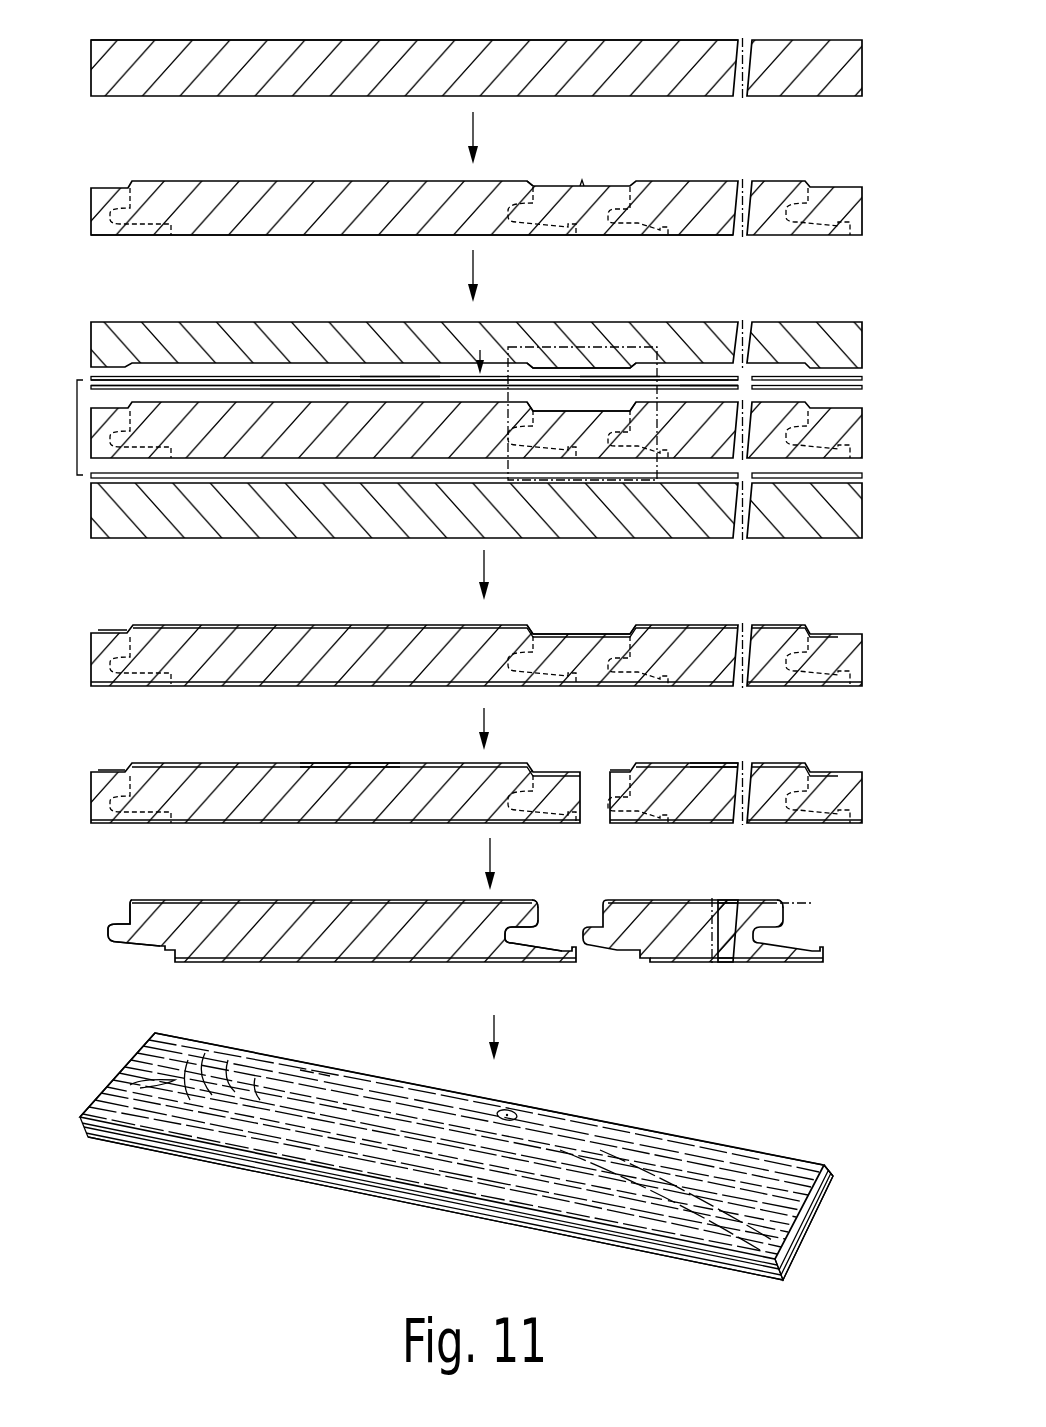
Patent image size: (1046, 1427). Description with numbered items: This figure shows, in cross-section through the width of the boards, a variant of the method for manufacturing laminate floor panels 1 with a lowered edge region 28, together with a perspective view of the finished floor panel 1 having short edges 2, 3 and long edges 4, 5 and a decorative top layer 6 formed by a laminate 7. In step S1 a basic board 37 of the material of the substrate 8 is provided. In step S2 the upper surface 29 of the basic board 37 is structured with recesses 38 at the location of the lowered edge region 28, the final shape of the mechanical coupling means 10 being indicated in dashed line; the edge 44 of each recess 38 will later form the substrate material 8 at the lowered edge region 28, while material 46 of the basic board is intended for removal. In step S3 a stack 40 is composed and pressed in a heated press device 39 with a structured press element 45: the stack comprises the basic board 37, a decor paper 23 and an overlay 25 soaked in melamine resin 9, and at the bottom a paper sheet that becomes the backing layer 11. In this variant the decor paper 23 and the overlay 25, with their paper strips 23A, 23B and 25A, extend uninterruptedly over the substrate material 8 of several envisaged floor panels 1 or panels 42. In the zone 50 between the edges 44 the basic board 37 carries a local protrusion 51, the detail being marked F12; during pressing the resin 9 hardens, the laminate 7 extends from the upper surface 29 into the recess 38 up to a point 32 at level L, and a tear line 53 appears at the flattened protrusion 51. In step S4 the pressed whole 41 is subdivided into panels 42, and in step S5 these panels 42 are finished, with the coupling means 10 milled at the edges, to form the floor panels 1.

The floor panel 1 is at (343, 928).
The short edge 2 is at (97, 1082).
The short edge 3 is at (828, 1154).
The long edge 4 is at (111, 918).
The long edge 5 is at (543, 922).
The decorative top layer 6 is at (310, 1094).
The laminate 7 is at (290, 765).
The substrate 8 is at (325, 222).
The melamine resin 9 is at (226, 386).
The mechanical coupling means 10 is at (124, 211).
The backing layer 11 is at (347, 478).
The decor paper 23 is at (187, 384).
The paper strip 23A is at (300, 387).
The paper strip 23B is at (706, 388).
The overlay 25 is at (142, 375).
The paper strip 25A is at (398, 380).
The lowered edge region 28 is at (133, 901).
The upper surface 29 is at (470, 40).
The point 32 is at (795, 903).
The basic board 37 is at (352, 76).
The recess 38 is at (128, 186).
The press device 39 is at (792, 312).
The stack 40 is at (77, 428).
The pressed whole 41 is at (105, 668).
The panel 42 is at (368, 806).
The edge 44 is at (532, 184).
The structured press element 45 is at (535, 347).
The material 46 is at (582, 201).
The zone 50 is at (545, 400).
The protrusion 51 is at (594, 404).
The tear line 53 is at (578, 630).
The detail region shown in Fig. 12 F12 is at (606, 345).
The level L is at (810, 884).
The step of providing a basic board S1 is at (150, 127).
The step of structuring the upper surface S2 is at (150, 272).
The step of composing and pressing a stack S3 is at (150, 572).
The step of subdividing the pressed whole S4 is at (150, 852).
The step of finishing the panels S5 is at (170, 982).